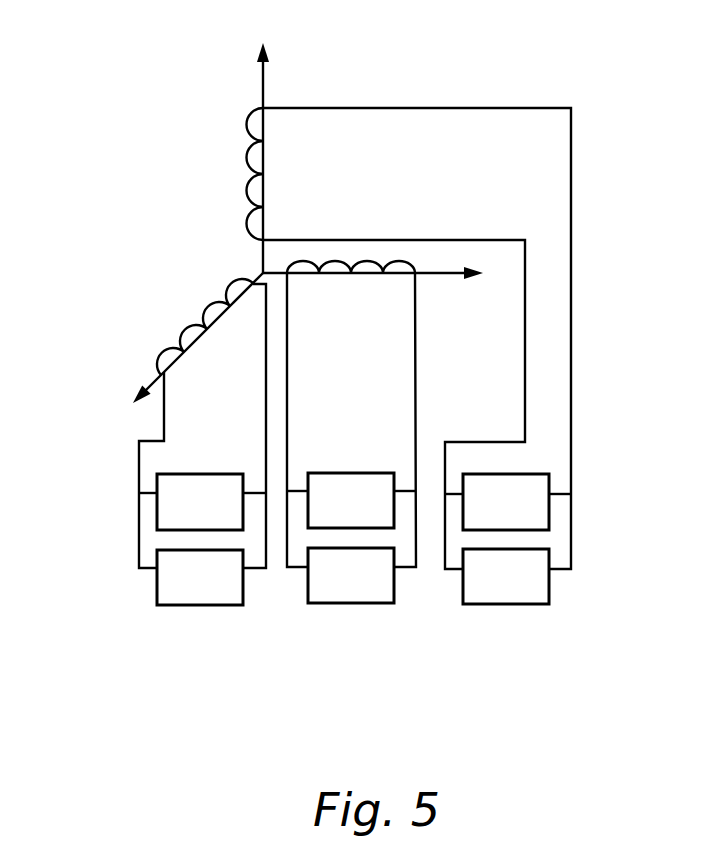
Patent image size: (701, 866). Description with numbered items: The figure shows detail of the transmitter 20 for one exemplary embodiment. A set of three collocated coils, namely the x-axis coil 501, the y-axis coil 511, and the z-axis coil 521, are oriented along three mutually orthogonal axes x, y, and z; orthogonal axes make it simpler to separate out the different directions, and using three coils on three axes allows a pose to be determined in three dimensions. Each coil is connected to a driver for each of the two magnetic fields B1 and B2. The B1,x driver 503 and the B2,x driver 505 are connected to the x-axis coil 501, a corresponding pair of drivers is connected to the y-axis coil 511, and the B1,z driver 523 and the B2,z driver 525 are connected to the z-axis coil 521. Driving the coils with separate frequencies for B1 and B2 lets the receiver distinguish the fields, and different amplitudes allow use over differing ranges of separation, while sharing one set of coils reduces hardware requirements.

The transmitter 20 is at (48, 710).
The x-axis coil 501 is at (188, 327).
The y-axis coil 511 is at (355, 282).
The z-axis coil 521 is at (248, 121).
The B1,x driver 503 is at (158, 476).
The B2,x driver 505 is at (158, 553).
The B1,z driver 523 is at (372, 473).
The B2,z driver 525 is at (358, 604).